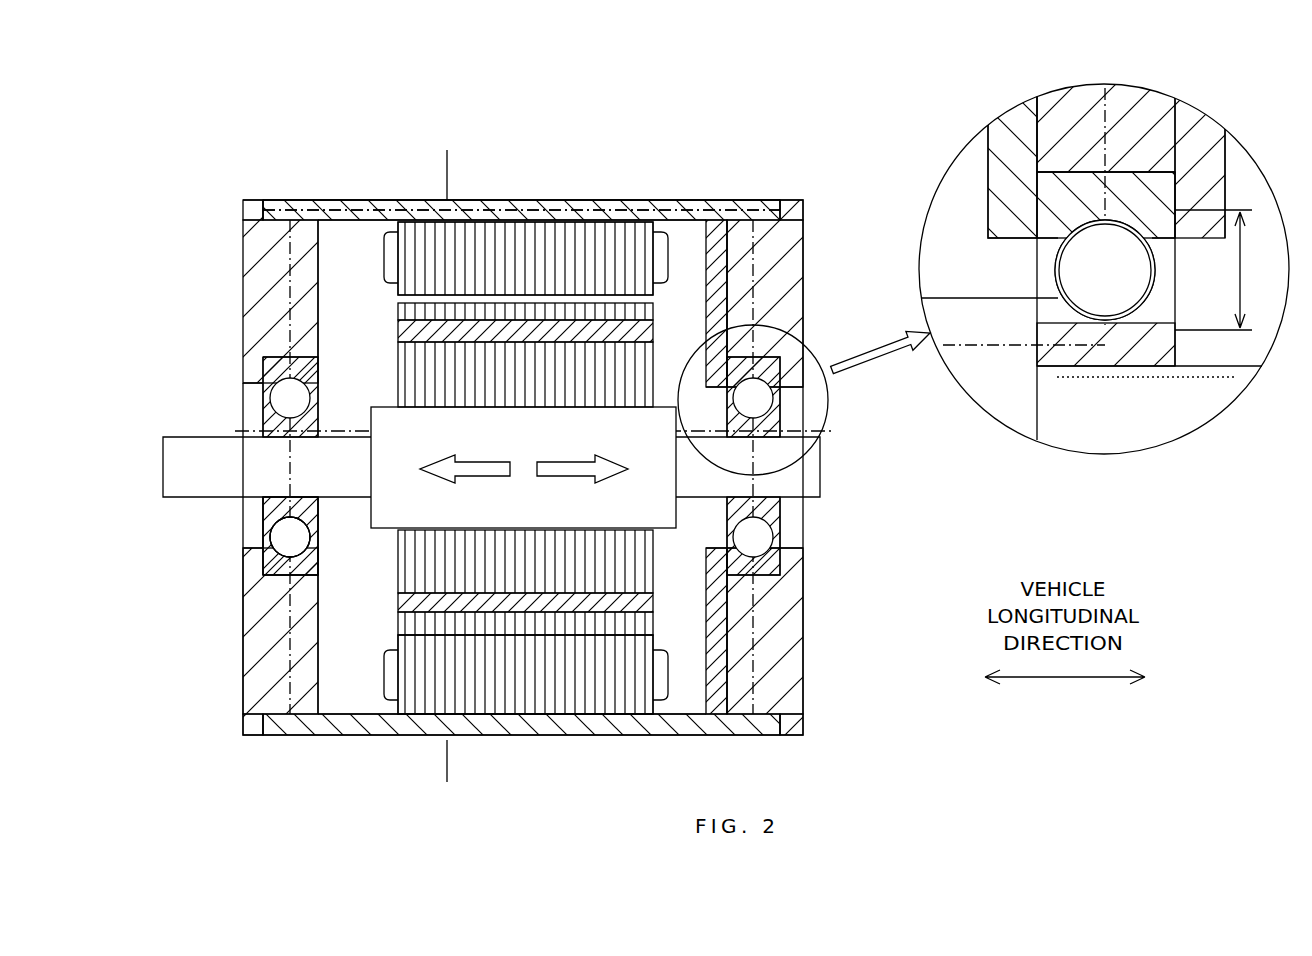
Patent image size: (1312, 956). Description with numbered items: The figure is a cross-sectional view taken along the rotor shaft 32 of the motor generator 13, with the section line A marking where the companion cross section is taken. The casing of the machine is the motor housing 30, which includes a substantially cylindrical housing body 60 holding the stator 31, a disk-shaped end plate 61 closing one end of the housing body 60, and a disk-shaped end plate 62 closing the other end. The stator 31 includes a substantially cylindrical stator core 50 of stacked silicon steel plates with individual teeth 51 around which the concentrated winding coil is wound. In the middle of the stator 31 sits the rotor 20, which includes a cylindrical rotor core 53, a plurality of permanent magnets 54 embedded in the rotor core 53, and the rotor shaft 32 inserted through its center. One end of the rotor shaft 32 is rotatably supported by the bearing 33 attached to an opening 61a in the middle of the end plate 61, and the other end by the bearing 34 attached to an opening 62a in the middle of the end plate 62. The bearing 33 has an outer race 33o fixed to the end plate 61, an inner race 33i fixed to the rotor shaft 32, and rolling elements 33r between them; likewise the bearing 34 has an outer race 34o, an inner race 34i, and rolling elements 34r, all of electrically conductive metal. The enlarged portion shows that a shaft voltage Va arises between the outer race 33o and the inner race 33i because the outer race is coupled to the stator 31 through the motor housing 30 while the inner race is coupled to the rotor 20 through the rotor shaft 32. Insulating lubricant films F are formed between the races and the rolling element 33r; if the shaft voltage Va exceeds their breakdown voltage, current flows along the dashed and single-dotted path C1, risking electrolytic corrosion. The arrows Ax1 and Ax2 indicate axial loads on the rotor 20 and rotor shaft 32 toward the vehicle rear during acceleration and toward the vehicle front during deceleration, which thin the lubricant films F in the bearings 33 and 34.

The motor generator 13 is at (226, 126).
The rotor 20 is at (375, 322).
The motor housing 30 is at (772, 196).
The stator 31 is at (375, 265).
The rotor shaft 32 is at (163, 466).
The bearing 33 is at (865, 503).
The inner race 33i is at (1045, 318).
The outer race 33o is at (1045, 228).
The rolling element 33r is at (1058, 270).
The bearing 34 is at (180, 505).
The inner race 34i is at (265, 512).
The outer race 34o is at (265, 572).
The rolling element 34r is at (268, 538).
The stator core 50 is at (400, 680).
The teeth 51 is at (508, 434).
The rotor core 53 is at (400, 568).
The permanent magnets 54 is at (400, 335).
The housing body 60 is at (540, 198).
The end plate 61 is at (790, 262).
The opening 61a is at (790, 333).
The end plate 62 is at (243, 300).
The opening 62a is at (272, 372).
The path C1 is at (690, 208).
The lubricant film F is at (1117, 318).
The shaft voltage Va is at (1243, 268).
The arrow indicating axial load toward the rear side Ax1 is at (562, 478).
The arrow indicating axial load toward the front side Ax2 is at (478, 478).
The line A- A is at (443, 158).